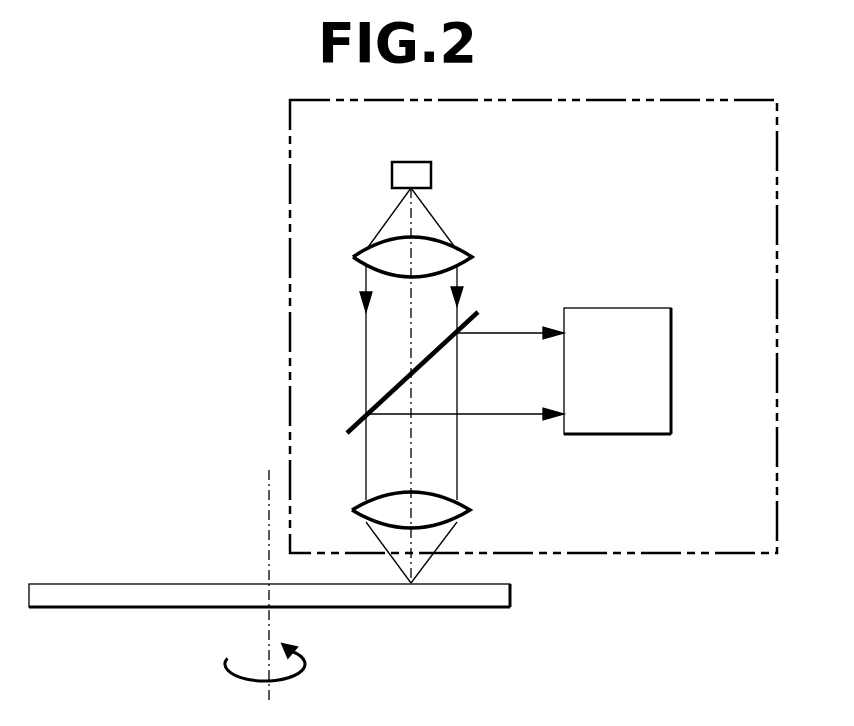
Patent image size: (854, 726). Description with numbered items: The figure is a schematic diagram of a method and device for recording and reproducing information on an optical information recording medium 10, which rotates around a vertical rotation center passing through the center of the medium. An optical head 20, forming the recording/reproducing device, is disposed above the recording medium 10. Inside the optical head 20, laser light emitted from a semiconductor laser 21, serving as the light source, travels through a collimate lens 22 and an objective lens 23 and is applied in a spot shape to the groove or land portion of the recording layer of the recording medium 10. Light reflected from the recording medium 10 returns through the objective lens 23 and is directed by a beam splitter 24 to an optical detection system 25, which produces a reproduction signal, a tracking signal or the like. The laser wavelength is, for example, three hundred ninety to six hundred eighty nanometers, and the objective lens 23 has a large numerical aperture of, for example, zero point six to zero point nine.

The optical information recording medium 10 is at (92, 596).
The optical head 20 is at (290, 187).
The semiconductor laser 21 is at (432, 176).
The collimate lens 22 is at (433, 255).
The objective lens 23 is at (440, 494).
The beam splitter 24 is at (388, 392).
The optical detection system 25 is at (643, 312).